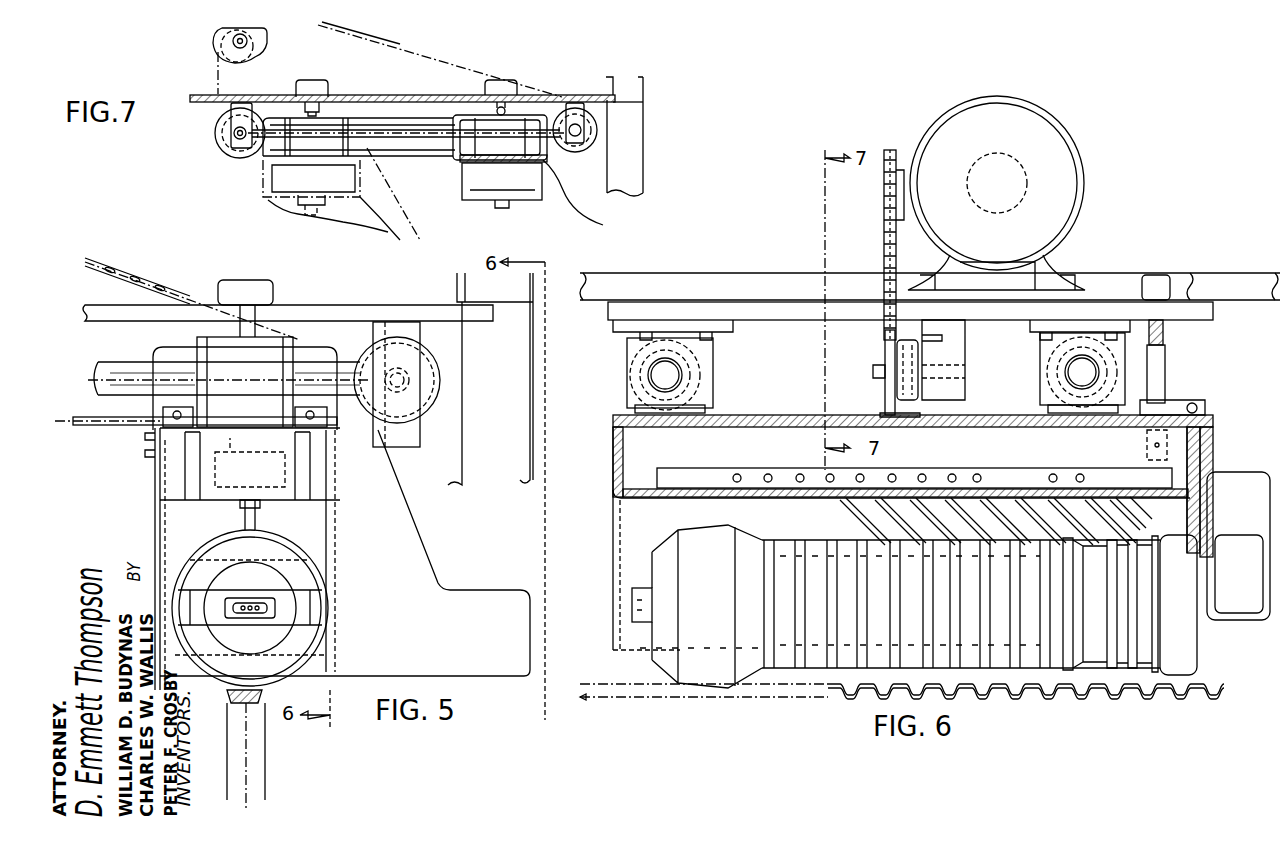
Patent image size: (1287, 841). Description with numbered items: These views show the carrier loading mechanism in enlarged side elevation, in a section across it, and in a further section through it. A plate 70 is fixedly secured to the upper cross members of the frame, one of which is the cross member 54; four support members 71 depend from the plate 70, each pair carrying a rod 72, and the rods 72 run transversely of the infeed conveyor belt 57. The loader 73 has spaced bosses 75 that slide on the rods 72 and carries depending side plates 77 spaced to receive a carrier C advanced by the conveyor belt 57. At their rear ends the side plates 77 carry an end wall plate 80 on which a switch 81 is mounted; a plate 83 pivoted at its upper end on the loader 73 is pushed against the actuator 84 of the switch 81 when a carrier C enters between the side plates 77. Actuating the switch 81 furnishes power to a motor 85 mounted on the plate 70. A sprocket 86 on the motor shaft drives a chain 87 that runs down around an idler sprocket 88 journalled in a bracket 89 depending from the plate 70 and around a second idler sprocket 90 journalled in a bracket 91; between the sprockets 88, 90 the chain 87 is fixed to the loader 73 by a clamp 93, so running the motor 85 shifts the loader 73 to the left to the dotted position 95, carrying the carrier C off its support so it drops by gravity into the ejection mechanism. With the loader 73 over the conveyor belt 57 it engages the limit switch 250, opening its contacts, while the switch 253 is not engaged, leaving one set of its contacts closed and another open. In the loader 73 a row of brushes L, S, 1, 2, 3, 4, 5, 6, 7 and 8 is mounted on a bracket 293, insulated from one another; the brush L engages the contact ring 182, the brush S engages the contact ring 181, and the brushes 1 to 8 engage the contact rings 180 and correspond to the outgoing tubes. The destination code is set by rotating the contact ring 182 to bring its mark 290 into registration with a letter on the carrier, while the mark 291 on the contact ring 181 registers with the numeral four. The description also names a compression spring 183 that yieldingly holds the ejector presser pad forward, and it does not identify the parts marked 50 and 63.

In FIG. 6, the brush 1 is at (1055, 520).
In FIG. 6, the brush 2 is at (1028, 521).
In FIG. 6, the brush 3 is at (999, 521).
In FIG. 6, the brush 4 is at (974, 521).
In FIG. 6, the brush 5 is at (942, 521).
In FIG. 6, the brush 6 is at (912, 521).
In FIG. 6, the brush 7 is at (878, 521).
In FIG. 5, the brush 8 is at (240, 523).
In FIG. 6, the brush 8 is at (817, 521).
In FIG. 6, the brush S is at (1097, 524).
In FIG. 6, the brush L is at (1118, 511).
In FIG. 5, the carrier C is at (268, 554).
In FIG. 6, the carrier C is at (918, 606).
In FIG. 5, the frame 50 is at (496, 408).
In FIG. 5, the upper cross member 54 is at (490, 305).
In FIG. 6, the upper cross member 54 is at (689, 290).
In FIG. 5, the conveyor belt 57 is at (264, 696).
In FIG. 6, the conveyor belt 57 is at (1150, 701).
In FIG. 6, the trough 63 is at (906, 490).
In FIG. 7, the plate 70 is at (378, 97).
In FIG. 5, the plate 70 is at (366, 305).
In FIG. 6, the plate 70 is at (783, 310).
In FIG. 6, the support member 71 is at (627, 390).
In FIG. 7, the rod 72 is at (396, 131).
In FIG. 5, the rod 72 is at (110, 398).
In FIG. 6, the rod 72 is at (677, 374).
In FIG. 7, the loader 73 is at (463, 176).
In FIG. 5, the loader 73 is at (165, 428).
In FIG. 6, the loader 73 is at (782, 415).
In FIG. 7, the boss 75 is at (500, 137).
In FIG. 5, the boss 75 is at (245, 383).
In FIG. 6, the boss 75 is at (632, 364).
In FIG. 5, the side plate 77 is at (158, 520).
In FIG. 6, the side plate 77 is at (646, 538).
In FIG. 6, the end wall plate 80 is at (1216, 450).
In FIG. 6, the switch 81 is at (1238, 546).
In FIG. 6, the plate 83 is at (1198, 498).
In FIG. 6, the actuator 84 is at (1210, 559).
In FIG. 6, the motor 85 is at (1066, 218).
In FIG. 7, the sprocket 86 is at (263, 43).
In FIG. 6, the sprocket 86 is at (887, 221).
In FIG. 7, the chain 87 is at (217, 72).
In FIG. 5, the chain 87 is at (165, 274).
In FIG. 6, the chain 87 is at (884, 253).
In FIG. 7, the idler sprocket 88 is at (236, 135).
In FIG. 7, the bracket 89 is at (236, 118).
In FIG. 7, the second idler sprocket 90 is at (600, 130).
In FIG. 5, the second idler sprocket 90 is at (425, 369).
In FIG. 6, the second idler sprocket 90 is at (887, 350).
In FIG. 7, the bracket 91 is at (590, 108).
In FIG. 5, the bracket 91 is at (406, 325).
In FIG. 6, the bracket 91 is at (960, 358).
In FIG. 6, the clamp 93 is at (920, 427).
In FIG. 7, the dotted outline position 95 is at (270, 183).
In FIG. 6, the contact ring 180 is at (800, 642).
In FIG. 6, the contact ring 181 is at (1103, 615).
In FIG. 6, the contact ring 182 is at (1131, 626).
In FIG. 6, the compression spring 183 is at (632, 605).
In FIG. 7, the limit switch 250 is at (507, 82).
In FIG. 5, the limit switch 250 is at (254, 280).
In FIG. 6, the limit switch 250 is at (1157, 275).
In FIG. 7, the switch 253 is at (320, 80).
In FIG. 6, the mark 290 is at (1137, 588).
In FIG. 6, the mark 291 is at (1093, 596).
In FIG. 6, the bracket 293 is at (648, 490).